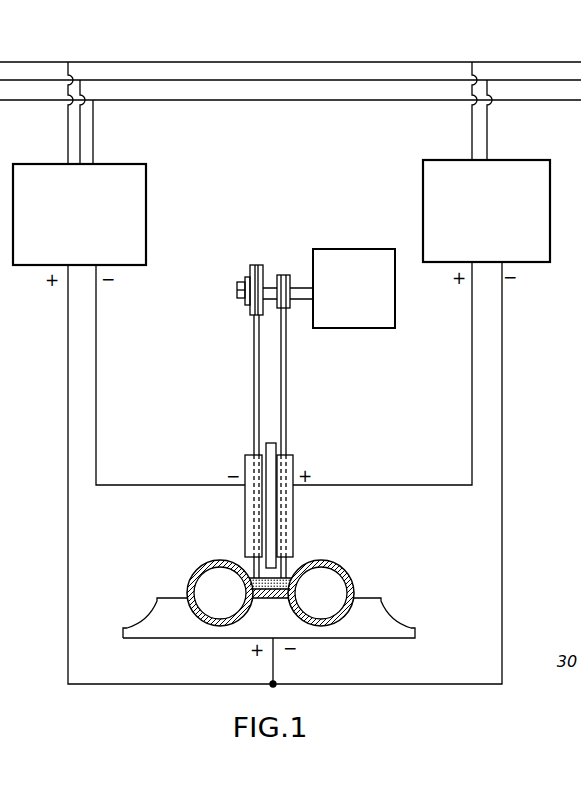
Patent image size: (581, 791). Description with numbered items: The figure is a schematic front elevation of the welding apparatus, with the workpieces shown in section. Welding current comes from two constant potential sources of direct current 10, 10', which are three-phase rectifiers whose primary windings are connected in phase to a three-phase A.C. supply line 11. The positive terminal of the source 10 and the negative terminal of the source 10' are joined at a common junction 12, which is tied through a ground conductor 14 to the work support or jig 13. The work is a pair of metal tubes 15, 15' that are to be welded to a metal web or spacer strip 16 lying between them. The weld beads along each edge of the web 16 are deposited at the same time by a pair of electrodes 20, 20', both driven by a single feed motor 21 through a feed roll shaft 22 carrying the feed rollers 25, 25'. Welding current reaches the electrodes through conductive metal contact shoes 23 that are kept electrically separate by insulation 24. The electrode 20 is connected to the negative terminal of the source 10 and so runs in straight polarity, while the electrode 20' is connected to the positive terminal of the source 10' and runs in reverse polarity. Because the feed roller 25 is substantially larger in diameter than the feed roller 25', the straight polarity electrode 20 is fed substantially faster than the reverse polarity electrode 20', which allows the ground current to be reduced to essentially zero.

The three-phase A.C. supply line 11 is at (330, 50).
The constant potential source of direct current 10 is at (113, 214).
The constant potential source of direct current 10' is at (457, 208).
The feed motor 21 is at (378, 305).
The feed roll shaft 22 is at (298, 288).
The feed roller 25 is at (245, 270).
The feed roller 25' is at (286, 255).
The electrode 20 is at (236, 446).
The electrode 20' is at (309, 443).
The conductive metal contact shoe 23 is at (247, 517).
The insulation 24 is at (270, 450).
The metal tube 15 is at (209, 585).
The metal tube 15' is at (339, 582).
The metal web or spacer strip 16 is at (273, 599).
The work support or jig 13 is at (375, 618).
The ground conductor 14 is at (268, 668).
The junction 12 is at (276, 682).